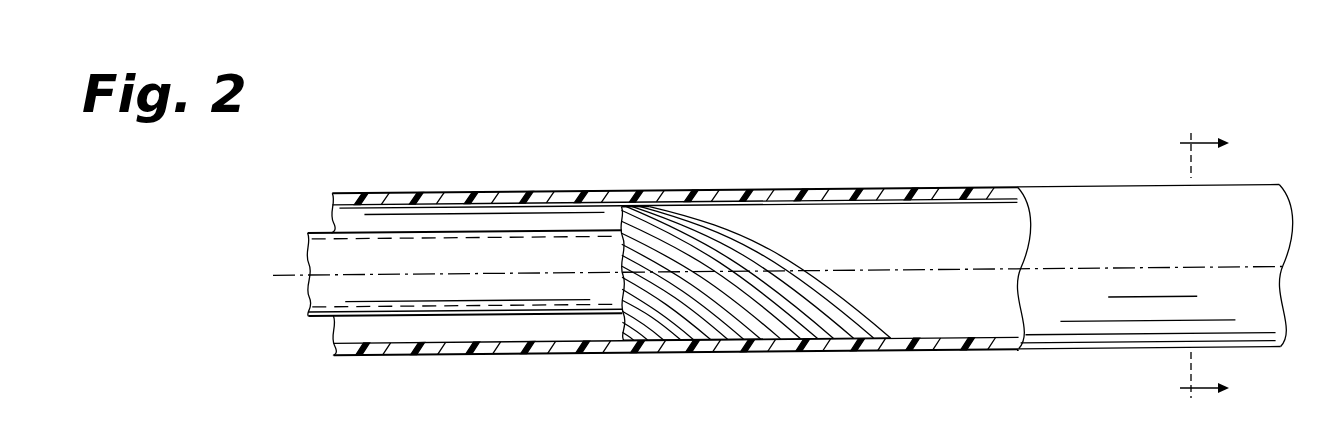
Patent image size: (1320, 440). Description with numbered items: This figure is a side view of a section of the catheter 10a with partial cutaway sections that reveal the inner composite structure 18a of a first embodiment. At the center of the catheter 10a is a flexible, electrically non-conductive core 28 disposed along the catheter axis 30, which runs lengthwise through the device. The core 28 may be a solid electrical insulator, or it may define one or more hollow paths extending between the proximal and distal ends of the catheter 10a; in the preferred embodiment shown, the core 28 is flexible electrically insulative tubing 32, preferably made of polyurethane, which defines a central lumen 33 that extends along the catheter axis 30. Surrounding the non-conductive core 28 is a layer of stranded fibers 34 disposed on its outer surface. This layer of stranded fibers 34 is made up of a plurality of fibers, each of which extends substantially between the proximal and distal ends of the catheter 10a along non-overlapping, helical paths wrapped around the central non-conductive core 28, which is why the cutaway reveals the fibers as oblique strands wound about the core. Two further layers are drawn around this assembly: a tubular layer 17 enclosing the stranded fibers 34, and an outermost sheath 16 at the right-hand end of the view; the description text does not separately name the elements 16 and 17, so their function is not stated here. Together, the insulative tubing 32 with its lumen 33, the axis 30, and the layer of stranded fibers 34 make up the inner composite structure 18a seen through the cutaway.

The catheter 10a is at (572, 100).
The outer sheath 16 is at (1078, 200).
The tubular liner 17 is at (688, 190).
The inner composite structure 18a is at (248, 221).
The core 28 is at (226, 266).
The catheter axis 30 is at (285, 276).
The electrically insulative tubing 32 is at (312, 232).
The central lumen 33 is at (392, 295).
The layer of stranded fibers 34 is at (657, 352).